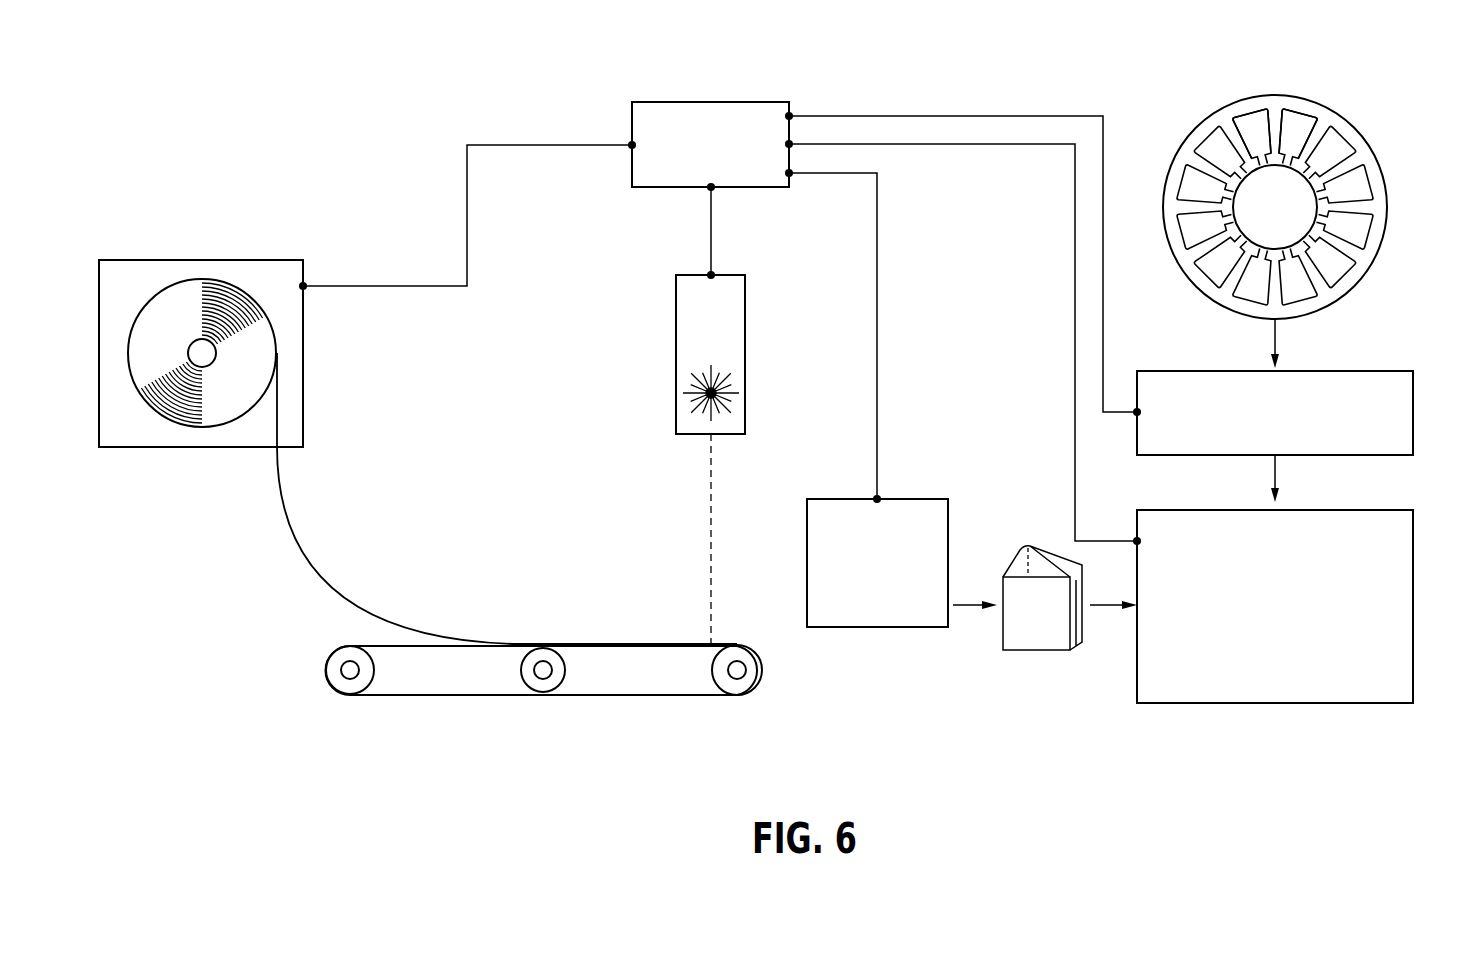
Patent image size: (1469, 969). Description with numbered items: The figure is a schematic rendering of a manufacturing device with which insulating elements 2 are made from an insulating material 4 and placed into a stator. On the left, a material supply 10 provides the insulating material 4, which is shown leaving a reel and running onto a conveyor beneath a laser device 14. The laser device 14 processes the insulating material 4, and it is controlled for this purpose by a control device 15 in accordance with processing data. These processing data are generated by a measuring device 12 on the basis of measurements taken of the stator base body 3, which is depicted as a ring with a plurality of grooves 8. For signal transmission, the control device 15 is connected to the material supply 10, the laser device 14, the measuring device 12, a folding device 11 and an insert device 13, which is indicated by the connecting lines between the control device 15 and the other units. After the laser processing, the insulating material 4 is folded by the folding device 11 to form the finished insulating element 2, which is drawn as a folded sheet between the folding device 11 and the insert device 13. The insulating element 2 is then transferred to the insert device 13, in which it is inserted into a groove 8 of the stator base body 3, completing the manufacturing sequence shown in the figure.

The insulating element 2 is at (1041, 628).
The stator base body 3 is at (1372, 187).
The insulating material 4 is at (304, 546).
The groove 8 is at (1218, 135).
The material supply 10 is at (261, 260).
The folding device 11 is at (869, 585).
The measuring device 12 is at (1380, 418).
The insert device 13 is at (1345, 610).
The laser device 14 is at (692, 328).
The control device 15 is at (708, 135).